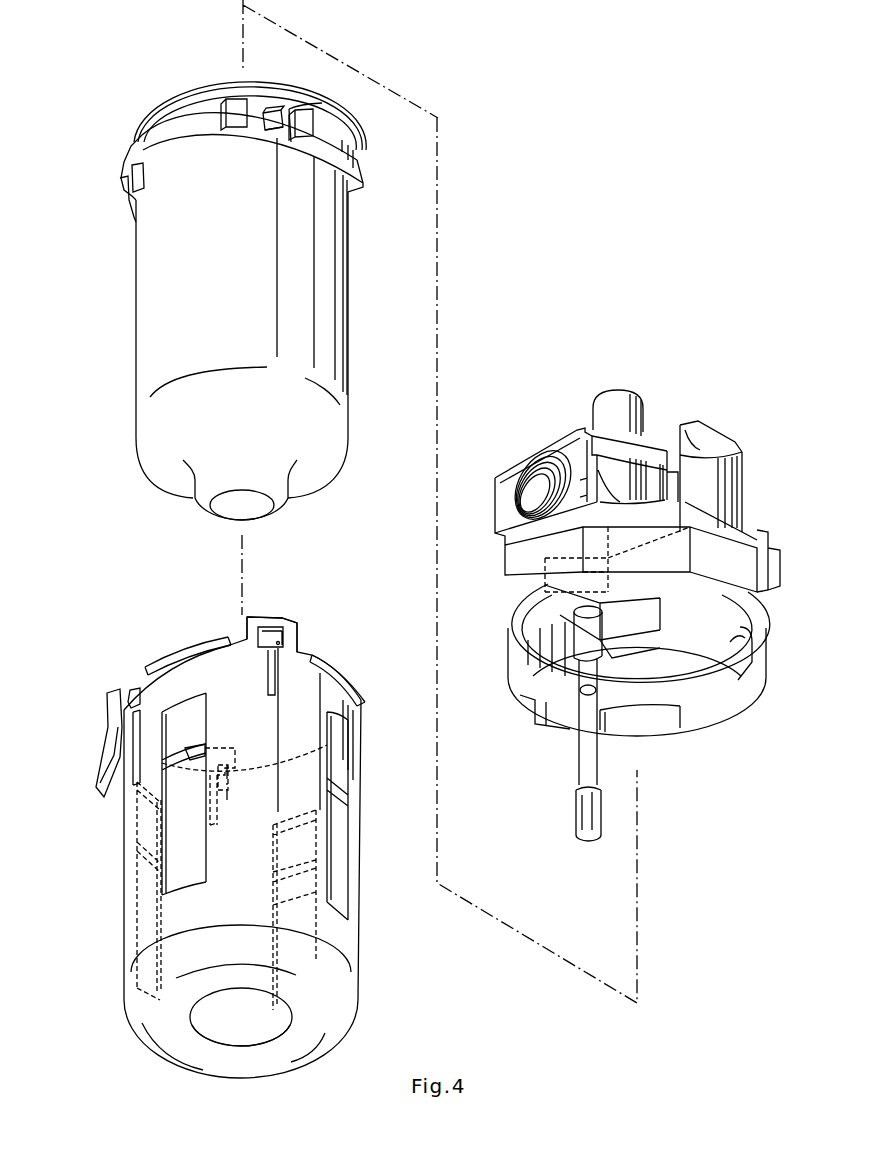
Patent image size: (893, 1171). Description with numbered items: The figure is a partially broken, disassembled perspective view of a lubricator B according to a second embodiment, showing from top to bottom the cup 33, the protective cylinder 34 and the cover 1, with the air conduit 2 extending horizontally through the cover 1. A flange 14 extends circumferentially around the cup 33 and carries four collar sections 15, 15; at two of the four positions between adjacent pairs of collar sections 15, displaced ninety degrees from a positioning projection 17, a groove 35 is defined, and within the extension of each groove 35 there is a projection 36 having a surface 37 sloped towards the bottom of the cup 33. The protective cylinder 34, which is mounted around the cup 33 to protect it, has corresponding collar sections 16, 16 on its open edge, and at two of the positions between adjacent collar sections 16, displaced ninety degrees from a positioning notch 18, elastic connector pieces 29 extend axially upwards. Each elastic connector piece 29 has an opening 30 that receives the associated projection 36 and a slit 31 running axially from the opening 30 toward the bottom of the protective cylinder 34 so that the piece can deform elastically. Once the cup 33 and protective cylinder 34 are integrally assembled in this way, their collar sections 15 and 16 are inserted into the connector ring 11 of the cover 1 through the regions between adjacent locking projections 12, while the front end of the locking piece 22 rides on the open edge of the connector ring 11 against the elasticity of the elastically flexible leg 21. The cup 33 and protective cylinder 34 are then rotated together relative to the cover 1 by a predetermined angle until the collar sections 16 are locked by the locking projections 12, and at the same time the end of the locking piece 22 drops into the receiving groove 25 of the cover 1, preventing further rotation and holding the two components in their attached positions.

The cover 1 is at (705, 402).
The air conduit 2 is at (543, 477).
The connector ring 11 is at (748, 587).
The locking projections 12 is at (768, 675).
The flange 14 is at (125, 157).
The collar sections 15 is at (194, 113).
The collar sections 16 is at (174, 652).
The positioning projection 17 is at (143, 180).
The positioning notch 18 is at (129, 688).
The elastically flexible leg 21 is at (136, 735).
The locking piece 22 is at (112, 712).
The receiving groove 25 is at (760, 640).
The elastic connector pieces 29 is at (273, 617).
The opening 30 is at (285, 630).
The slit 31 is at (268, 678).
The cup 33 is at (115, 305).
The protective cylinder 34 is at (117, 876).
The grooves 35 is at (291, 109).
The projection 36 is at (275, 110).
The sloped surface 37 is at (272, 131).
The lubricator B is at (676, 291).